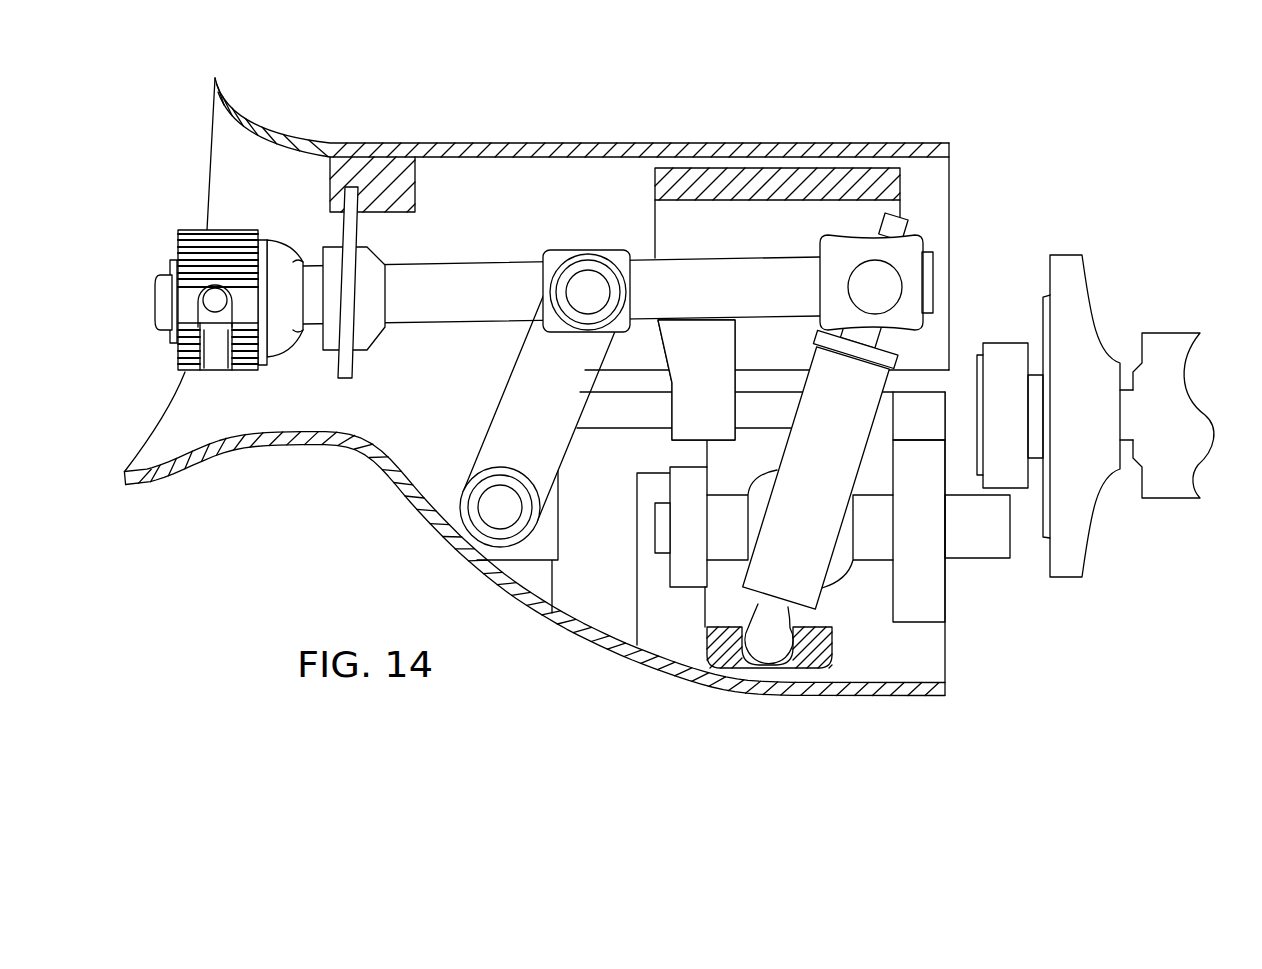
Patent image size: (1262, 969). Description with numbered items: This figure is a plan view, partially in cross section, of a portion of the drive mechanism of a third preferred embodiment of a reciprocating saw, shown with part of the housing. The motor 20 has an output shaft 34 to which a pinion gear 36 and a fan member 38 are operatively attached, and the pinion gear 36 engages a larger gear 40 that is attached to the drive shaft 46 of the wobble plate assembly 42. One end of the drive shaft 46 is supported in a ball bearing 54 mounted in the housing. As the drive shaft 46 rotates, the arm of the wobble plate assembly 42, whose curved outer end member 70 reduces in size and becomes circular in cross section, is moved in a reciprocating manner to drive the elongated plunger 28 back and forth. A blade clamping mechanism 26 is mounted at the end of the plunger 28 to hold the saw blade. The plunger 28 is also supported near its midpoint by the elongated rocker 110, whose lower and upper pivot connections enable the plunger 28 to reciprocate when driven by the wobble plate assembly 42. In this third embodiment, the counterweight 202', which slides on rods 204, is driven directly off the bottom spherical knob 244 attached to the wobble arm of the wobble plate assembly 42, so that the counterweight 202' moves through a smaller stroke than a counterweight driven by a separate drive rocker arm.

The motor 20 is at (1168, 413).
The blade clamping mechanism 26 is at (180, 352).
The plunger 28 is at (475, 297).
The output shaft 34 is at (962, 408).
The pinion gear 36 is at (920, 412).
The fan member 38 is at (1065, 268).
The gear 40 is at (922, 593).
The wobble plate assembly 42 is at (868, 470).
The drive shaft 46 is at (722, 537).
The ball bearing 54 is at (688, 523).
The curved outer end member 70 is at (825, 415).
The elongated rocker 110 is at (498, 395).
The counterweight 202' is at (753, 392).
The rods 204 is at (602, 410).
The spherical knob 244 is at (765, 643).